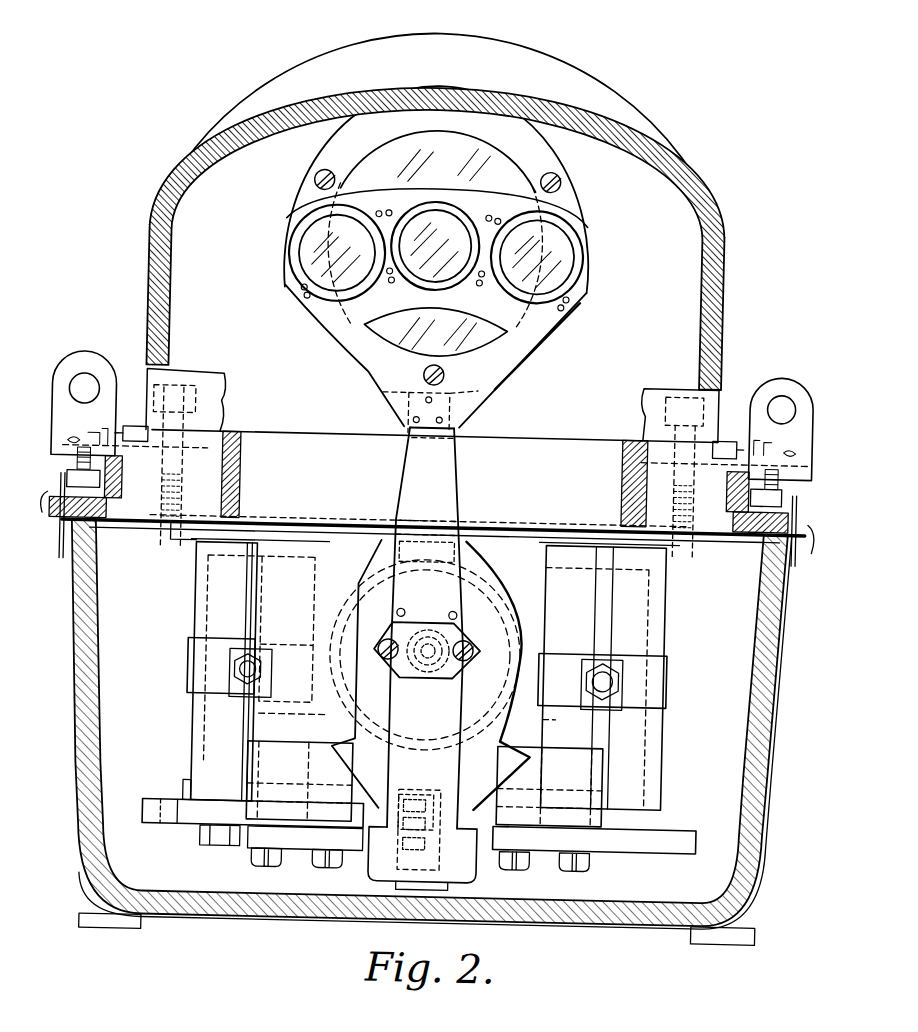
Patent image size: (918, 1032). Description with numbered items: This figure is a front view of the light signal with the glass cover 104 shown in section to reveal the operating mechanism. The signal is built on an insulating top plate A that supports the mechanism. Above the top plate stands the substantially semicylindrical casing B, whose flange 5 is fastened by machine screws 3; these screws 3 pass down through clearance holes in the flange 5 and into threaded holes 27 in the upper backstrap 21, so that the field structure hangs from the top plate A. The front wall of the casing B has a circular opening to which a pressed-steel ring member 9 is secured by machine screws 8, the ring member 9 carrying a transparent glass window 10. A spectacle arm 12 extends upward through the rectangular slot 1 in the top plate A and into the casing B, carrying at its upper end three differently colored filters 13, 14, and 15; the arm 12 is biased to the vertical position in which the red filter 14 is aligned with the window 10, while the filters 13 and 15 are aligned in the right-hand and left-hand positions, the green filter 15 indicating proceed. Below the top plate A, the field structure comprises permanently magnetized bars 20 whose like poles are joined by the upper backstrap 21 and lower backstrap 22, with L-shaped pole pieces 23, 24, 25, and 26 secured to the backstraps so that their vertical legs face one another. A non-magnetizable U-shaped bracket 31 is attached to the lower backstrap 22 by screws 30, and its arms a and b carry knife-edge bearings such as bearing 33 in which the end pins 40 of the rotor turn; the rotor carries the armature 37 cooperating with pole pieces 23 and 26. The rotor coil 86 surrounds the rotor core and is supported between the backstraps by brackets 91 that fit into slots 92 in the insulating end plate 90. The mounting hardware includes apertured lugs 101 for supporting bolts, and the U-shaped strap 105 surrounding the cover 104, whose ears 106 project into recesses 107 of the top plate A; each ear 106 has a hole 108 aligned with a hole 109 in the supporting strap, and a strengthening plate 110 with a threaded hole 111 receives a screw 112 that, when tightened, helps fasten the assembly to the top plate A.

The rectangular slot 1 is at (622, 440).
The machine screws 3 is at (183, 488).
The flange 5 is at (205, 436).
The machine screws 8 is at (322, 170).
The ring members 9 is at (303, 197).
The circular windows 10 is at (470, 158).
The spectacle arm 12 is at (459, 482).
The filter 13 is at (536, 289).
The filter 14 is at (438, 273).
The filter 15 is at (310, 270).
The permanently magnetized rectangular bars 20 is at (228, 600).
The upper backstrap 21 is at (182, 545).
The lower backstrap 22 is at (195, 818).
The pole piece 23 is at (248, 750).
The pole piece 24 is at (496, 566).
The pole piece 25 is at (304, 840).
The pole piece 26 is at (552, 848).
The threaded holes 27 is at (165, 540).
The screws 30 is at (418, 856).
The non-magnetizable bracket 31 is at (395, 711).
The knife-edge bearing 33 is at (442, 672).
The armature 37 is at (310, 812).
The end pins 40 is at (440, 650).
The rotor coil 86 is at (370, 568).
The insulating end plate 90 is at (512, 612).
The brackets 91 is at (430, 628).
The slots 92 is at (410, 625).
The apertured lugs 101 is at (86, 382).
The glass cover 104 is at (220, 905).
The U-shaped strap 105 is at (300, 921).
The ears 106 is at (100, 486).
The recesses 107 is at (52, 522).
The hole 108 is at (134, 436).
The hole 109 is at (427, 435).
The strengthening plates 110 is at (108, 488).
The threaded holes 111 is at (425, 472).
The screws 112 is at (433, 430).
The top plate A is at (433, 543).
The casing B is at (238, 100).
The bracket arm a is at (430, 681).
The bracket arm b is at (381, 692).